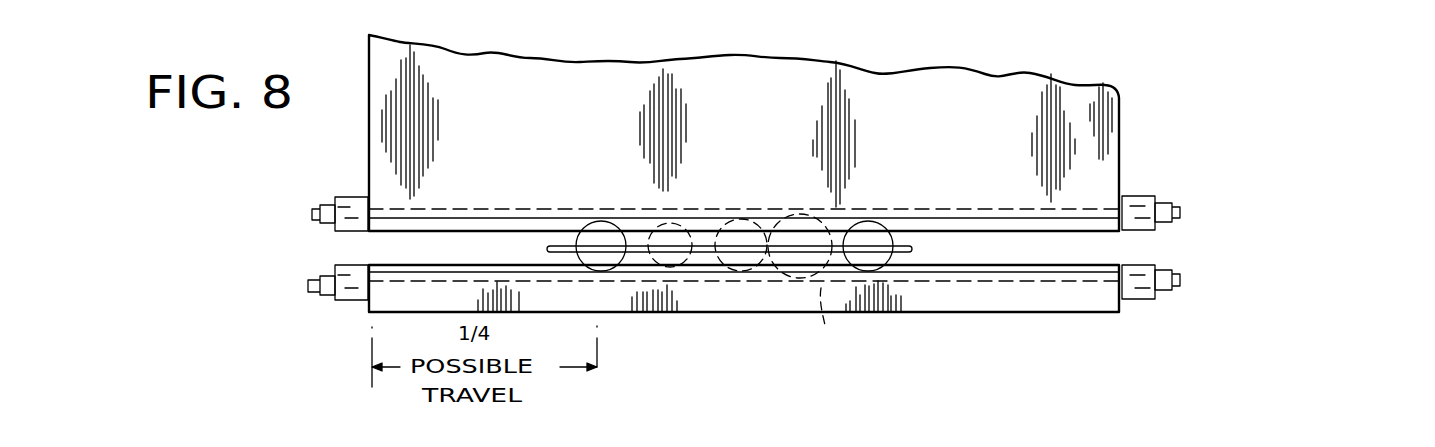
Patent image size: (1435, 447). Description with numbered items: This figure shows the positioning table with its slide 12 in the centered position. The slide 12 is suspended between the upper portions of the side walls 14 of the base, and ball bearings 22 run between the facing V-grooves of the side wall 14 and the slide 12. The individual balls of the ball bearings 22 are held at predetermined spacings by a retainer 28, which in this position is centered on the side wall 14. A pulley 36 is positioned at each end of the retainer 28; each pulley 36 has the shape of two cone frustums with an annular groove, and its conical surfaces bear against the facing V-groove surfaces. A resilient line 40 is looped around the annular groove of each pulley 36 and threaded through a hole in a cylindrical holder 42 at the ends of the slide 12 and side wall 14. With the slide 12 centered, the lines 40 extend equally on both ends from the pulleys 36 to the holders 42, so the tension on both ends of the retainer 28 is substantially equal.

The slide 12 is at (900, 73).
The side wall 14 is at (700, 313).
The ball bearings 22 is at (831, 270).
The retainer 28 is at (780, 247).
The pulley 36 is at (601, 221).
The resilient line 40 is at (330, 199).
The cylindrical holder 42 is at (350, 197).